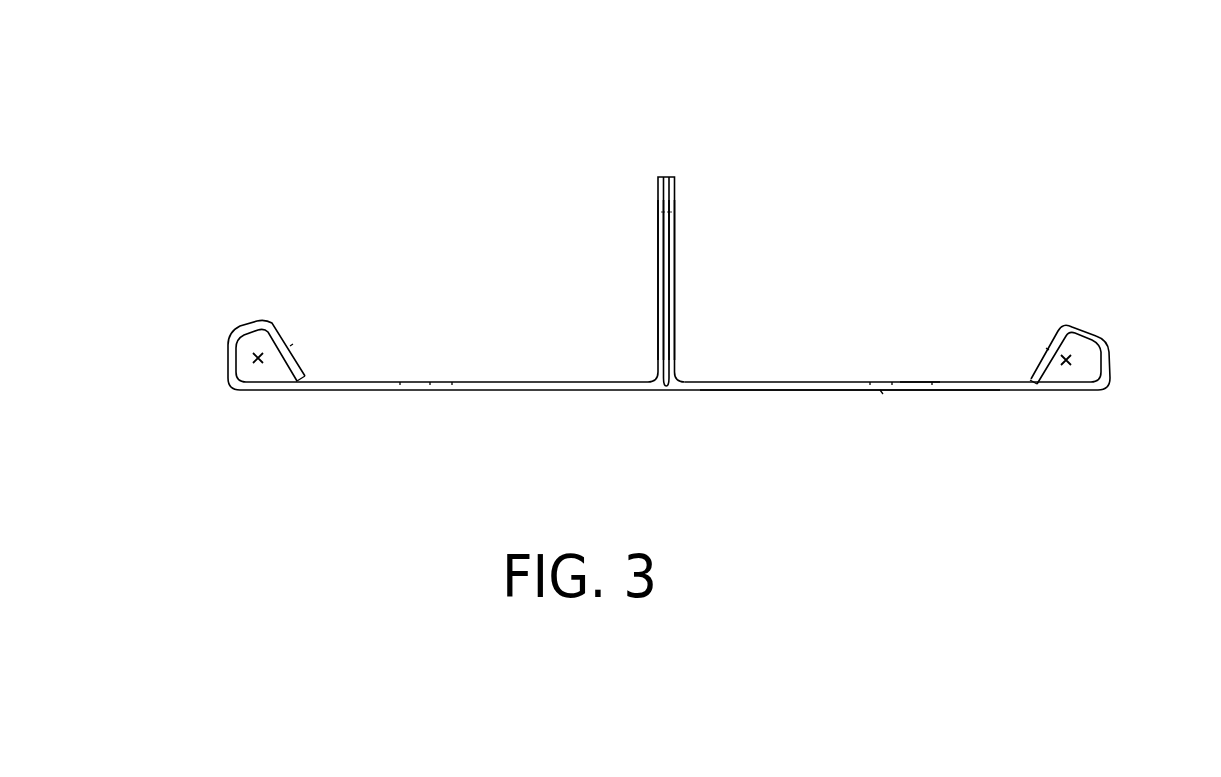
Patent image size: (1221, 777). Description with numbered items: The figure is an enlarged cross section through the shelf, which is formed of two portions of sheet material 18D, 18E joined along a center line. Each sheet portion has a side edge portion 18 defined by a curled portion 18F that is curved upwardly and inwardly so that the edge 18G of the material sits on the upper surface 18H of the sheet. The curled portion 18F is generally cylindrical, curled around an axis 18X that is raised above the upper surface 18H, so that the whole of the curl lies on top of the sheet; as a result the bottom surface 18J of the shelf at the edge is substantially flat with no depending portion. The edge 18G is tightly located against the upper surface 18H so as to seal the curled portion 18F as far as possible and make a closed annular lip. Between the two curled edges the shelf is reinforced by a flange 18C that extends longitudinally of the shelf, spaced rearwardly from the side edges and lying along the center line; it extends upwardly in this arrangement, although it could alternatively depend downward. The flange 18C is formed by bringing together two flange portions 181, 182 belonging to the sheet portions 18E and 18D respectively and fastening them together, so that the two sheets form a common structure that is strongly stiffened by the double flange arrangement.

The side edge portion 18 is at (1101, 382).
The flange 18C is at (672, 193).
The flange portion 181 is at (657, 237).
The flange portion 182 is at (671, 273).
The portion of sheet material 18D is at (846, 388).
The portion of sheet material 18E is at (478, 383).
The curled portion 18F is at (1070, 328).
The edge 18G is at (1033, 379).
The upper surface 18H is at (921, 383).
The bottom surface 18J is at (861, 392).
The axis 18X is at (1076, 370).